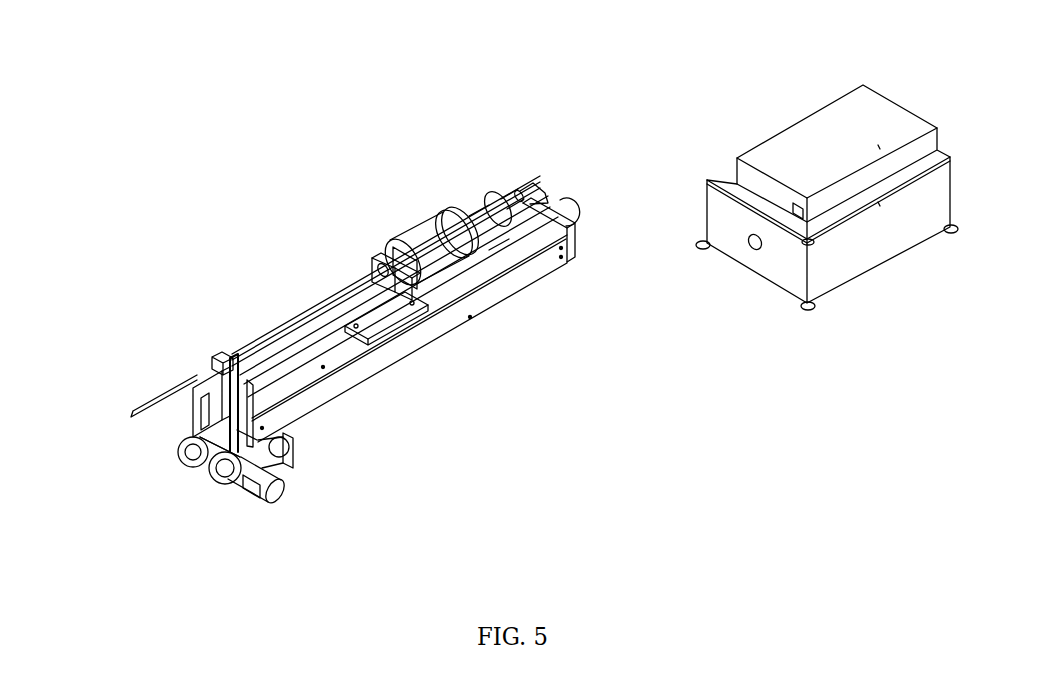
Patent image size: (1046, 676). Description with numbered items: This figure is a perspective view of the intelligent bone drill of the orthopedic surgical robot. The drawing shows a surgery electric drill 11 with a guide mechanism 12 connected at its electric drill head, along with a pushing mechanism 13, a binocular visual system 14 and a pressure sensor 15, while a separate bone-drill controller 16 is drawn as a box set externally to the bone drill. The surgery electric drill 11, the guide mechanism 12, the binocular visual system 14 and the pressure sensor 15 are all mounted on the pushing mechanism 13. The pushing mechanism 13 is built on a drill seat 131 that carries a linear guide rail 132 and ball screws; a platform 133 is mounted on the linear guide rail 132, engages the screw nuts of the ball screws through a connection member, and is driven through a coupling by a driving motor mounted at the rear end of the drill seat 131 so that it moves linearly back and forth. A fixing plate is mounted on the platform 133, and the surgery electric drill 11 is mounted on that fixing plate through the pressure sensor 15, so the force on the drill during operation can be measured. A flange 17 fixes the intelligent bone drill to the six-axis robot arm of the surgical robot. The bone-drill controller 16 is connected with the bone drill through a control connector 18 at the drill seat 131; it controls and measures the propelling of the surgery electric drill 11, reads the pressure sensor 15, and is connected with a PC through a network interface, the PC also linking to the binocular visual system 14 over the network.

The surgery electric drill 11 is at (410, 228).
The guide mechanism 12 is at (190, 387).
The pushing mechanism 13 is at (427, 325).
The drill seat 131 is at (323, 367).
The linear guide rail 132 is at (490, 241).
The platform 133 is at (364, 299).
The binocular visual system 14 is at (280, 496).
The pressure sensor 15 is at (373, 262).
The bone-drill controller 16 is at (838, 113).
The flange 17 is at (293, 458).
The control connector 18 is at (567, 230).